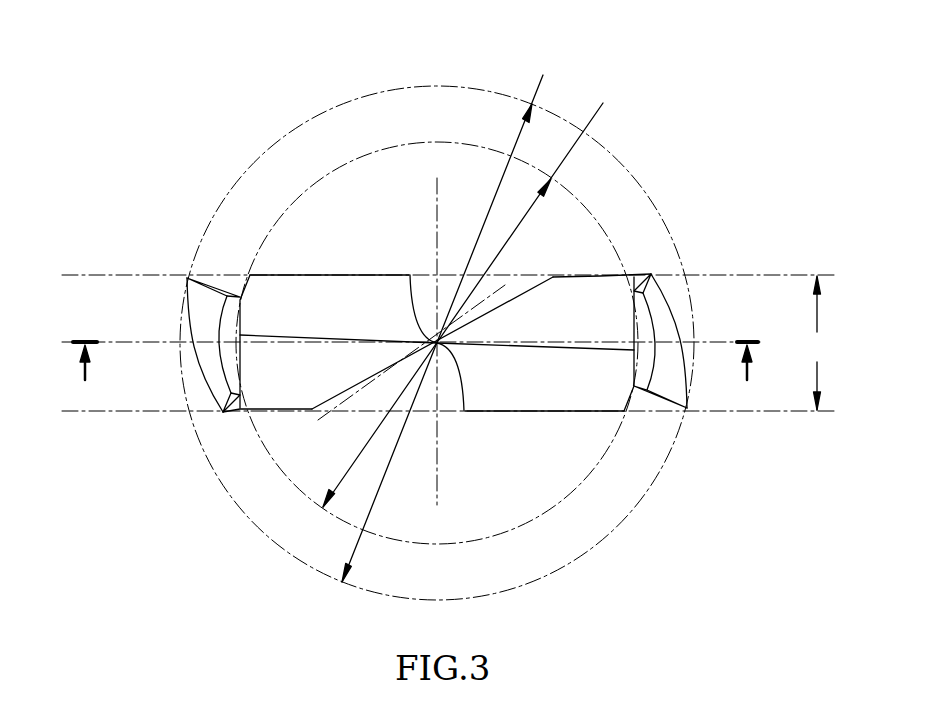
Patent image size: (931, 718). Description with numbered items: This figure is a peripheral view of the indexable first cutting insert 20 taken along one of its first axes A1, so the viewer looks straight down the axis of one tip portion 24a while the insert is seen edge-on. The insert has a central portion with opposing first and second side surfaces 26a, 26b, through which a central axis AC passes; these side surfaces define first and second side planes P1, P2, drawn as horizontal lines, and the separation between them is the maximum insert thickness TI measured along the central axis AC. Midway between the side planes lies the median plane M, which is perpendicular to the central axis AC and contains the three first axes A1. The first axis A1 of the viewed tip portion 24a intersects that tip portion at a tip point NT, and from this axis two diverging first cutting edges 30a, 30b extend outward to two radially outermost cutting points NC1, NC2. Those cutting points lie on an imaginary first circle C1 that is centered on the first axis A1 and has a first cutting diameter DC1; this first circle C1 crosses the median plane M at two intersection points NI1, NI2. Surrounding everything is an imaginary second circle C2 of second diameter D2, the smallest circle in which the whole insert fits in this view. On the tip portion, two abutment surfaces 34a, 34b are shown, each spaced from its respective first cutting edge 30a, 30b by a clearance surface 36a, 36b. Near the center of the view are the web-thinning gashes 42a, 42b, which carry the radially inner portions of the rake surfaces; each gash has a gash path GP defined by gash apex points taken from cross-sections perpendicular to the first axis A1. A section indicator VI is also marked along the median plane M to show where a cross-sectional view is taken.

The first cutting insert 20 is at (587, 432).
The tip portion 24a is at (423, 337).
The first side surface 26a is at (508, 412).
The second side surface 26b is at (343, 274).
The first cutting edge 30a is at (293, 408).
The first cutting edge 30b is at (584, 276).
The abutment surface 34a is at (344, 318).
The abutment surface 34b is at (590, 393).
The clearance surface 36a is at (328, 388).
The clearance surface 36b is at (593, 321).
The web-thinning gash 42a is at (418, 413).
The web-thinning gash 42b is at (438, 295).
The imaginary first circle C1 is at (590, 212).
The imaginary second circle C2 is at (485, 87).
The second diameter D2 is at (454, 318).
The first cutting diameter DC1 is at (485, 295).
The gash path GP is at (502, 280).
The tip point NT is at (384, 358).
The first axis A1 is at (466, 345).
The radially outermost cutting point NC1 is at (247, 407).
The radially outermost cutting point NC2 is at (186, 280).
The intersection point NI1 is at (222, 362).
The intersection point NI2 is at (652, 322).
The first side plane P1 is at (445, 415).
The second side plane P2 is at (445, 278).
The median plane M is at (415, 345).
The central axis AC is at (432, 346).
The section VI is at (99, 405).
The maximum insert thickness TI is at (814, 343).